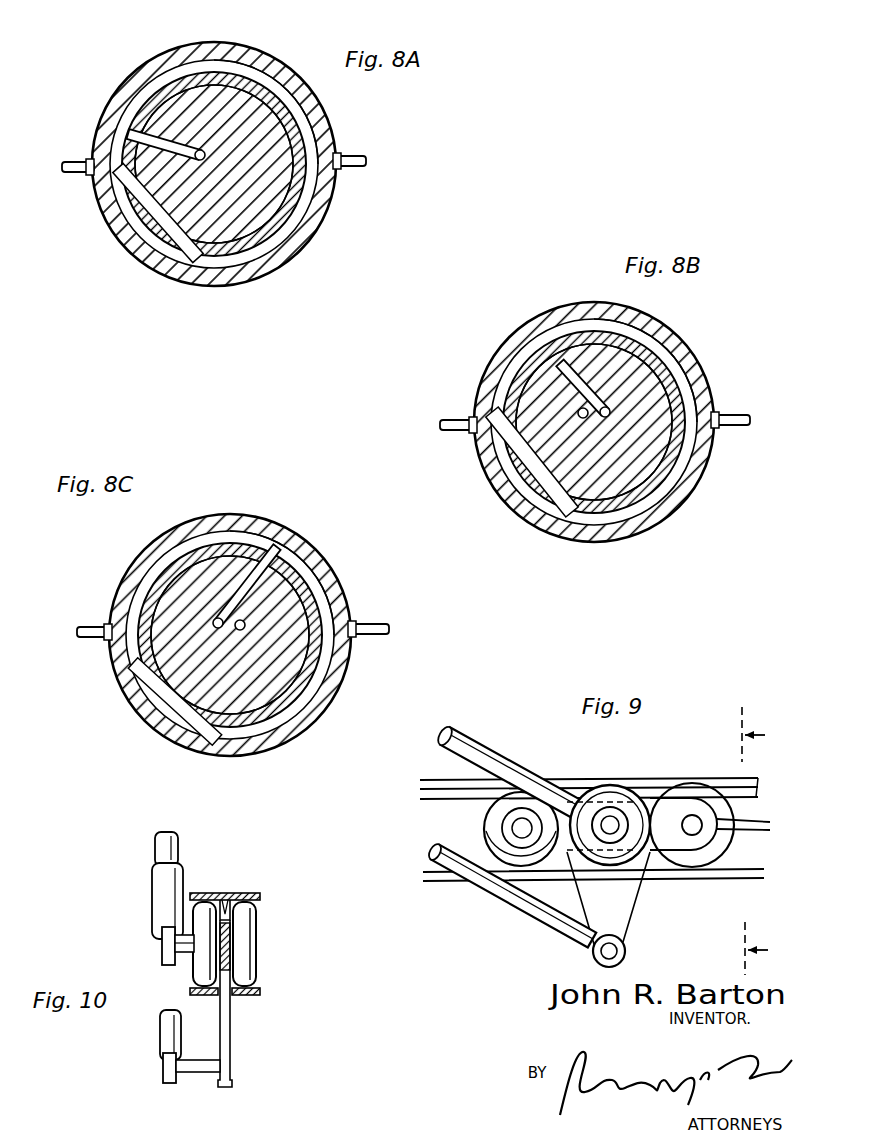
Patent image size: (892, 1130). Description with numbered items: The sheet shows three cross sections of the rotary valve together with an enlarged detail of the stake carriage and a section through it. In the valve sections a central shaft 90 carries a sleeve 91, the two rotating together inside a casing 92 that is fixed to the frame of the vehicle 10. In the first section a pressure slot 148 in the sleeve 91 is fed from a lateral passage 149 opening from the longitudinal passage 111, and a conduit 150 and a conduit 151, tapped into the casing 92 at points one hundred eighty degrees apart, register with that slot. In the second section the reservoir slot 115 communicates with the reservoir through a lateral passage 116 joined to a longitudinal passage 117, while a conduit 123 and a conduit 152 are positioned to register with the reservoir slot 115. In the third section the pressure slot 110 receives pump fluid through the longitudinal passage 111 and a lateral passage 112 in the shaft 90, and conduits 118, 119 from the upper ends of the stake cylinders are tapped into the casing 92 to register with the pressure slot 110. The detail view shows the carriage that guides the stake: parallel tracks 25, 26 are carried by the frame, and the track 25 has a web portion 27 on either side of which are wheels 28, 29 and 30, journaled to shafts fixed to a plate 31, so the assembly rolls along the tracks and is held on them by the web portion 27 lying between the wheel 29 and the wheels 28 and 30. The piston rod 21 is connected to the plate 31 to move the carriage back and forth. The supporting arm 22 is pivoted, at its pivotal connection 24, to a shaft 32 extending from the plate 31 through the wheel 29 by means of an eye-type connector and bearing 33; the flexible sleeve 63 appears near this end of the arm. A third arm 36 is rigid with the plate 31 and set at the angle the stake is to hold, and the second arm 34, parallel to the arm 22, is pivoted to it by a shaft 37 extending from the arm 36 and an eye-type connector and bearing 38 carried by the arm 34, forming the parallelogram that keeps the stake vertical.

In FIG. 9, the vehicle 10 is at (770, 841).
In FIG. 9, the piston rod 21 is at (766, 832).
In FIG. 10, the piston rod 21 is at (231, 946).
In FIG. 9, the supporting arm 22 is at (462, 731).
In FIG. 10, the supporting arm 22 is at (156, 910).
In FIG. 9, the pivotal connection 24 is at (601, 799).
In FIG. 9, the track 25 is at (684, 779).
In FIG. 10, the track 25 is at (250, 893).
In FIG. 9, the track 26 is at (741, 880).
In FIG. 10, the track 26 is at (258, 996).
In FIG. 10, the web portion 27 is at (225, 896).
In FIG. 9, the wheel 28 is at (490, 844).
In FIG. 9, the wheel 29 is at (606, 806).
In FIG. 10, the wheel 29 is at (191, 972).
In FIG. 9, the wheel 30 is at (726, 806).
In FIG. 10, the wheel 30 is at (258, 963).
In FIG. 9, the plate 31 is at (664, 806).
In FIG. 9, the shaft 32 is at (613, 820).
In FIG. 10, the shaft 32 is at (161, 945).
In FIG. 10, the eye-type connector and bearing 33 is at (166, 961).
In FIG. 9, the second arm 34 is at (525, 914).
In FIG. 10, the second arm 34 is at (166, 1034).
In FIG. 9, the third arm 36 is at (627, 908).
In FIG. 10, the third arm 36 is at (230, 1028).
In FIG. 10, the shaft 37 is at (200, 1074).
In FIG. 9, the eye-type connector and bearing 38 is at (627, 947).
In FIG. 9, the flexible sleeve 63 is at (512, 826).
In FIG. 8A, the central shaft 90 is at (280, 190).
In FIG. 8B, the central shaft 90 is at (657, 447).
In FIG. 8C, the central shaft 90 is at (293, 657).
In FIG. 8A, the sleeve 91 is at (285, 220).
In FIG. 8B, the sleeve 91 is at (668, 477).
In FIG. 8C, the sleeve 91 is at (312, 680).
In FIG. 8A, the casing 92 is at (285, 255).
In FIG. 8B, the casing 92 is at (668, 508).
In FIG. 8C, the casing 92 is at (316, 707).
In FIG. 8C, the pressure slot 110 is at (313, 578).
In FIG. 8A, the longitudinal passage 111 is at (208, 154).
In FIG. 8B, the longitudinal passage 111 is at (612, 418).
In FIG. 8C, the longitudinal passage 111 is at (213, 619).
In FIG. 8C, the lateral passage 112 is at (274, 548).
In FIG. 8B, the reservoir slot 115 is at (578, 326).
In FIG. 8B, the lateral passage 116 is at (562, 366).
In FIG. 8B, the longitudinal passage 117 is at (600, 408).
In FIG. 8C, the longitudinal passage 117 is at (247, 632).
In FIG. 8C, the conduit 118 is at (100, 626).
In FIG. 8C, the conduit 119 is at (370, 624).
In FIG. 8B, the conduit 123 is at (465, 418).
In FIG. 8A, the pressure slot 148 is at (158, 80).
In FIG. 8A, the lateral passage 149 is at (130, 128).
In FIG. 8A, the conduit 150 is at (352, 162).
In FIG. 8A, the conduit 151 is at (81, 175).
In FIG. 8B, the conduit 152 is at (753, 416).